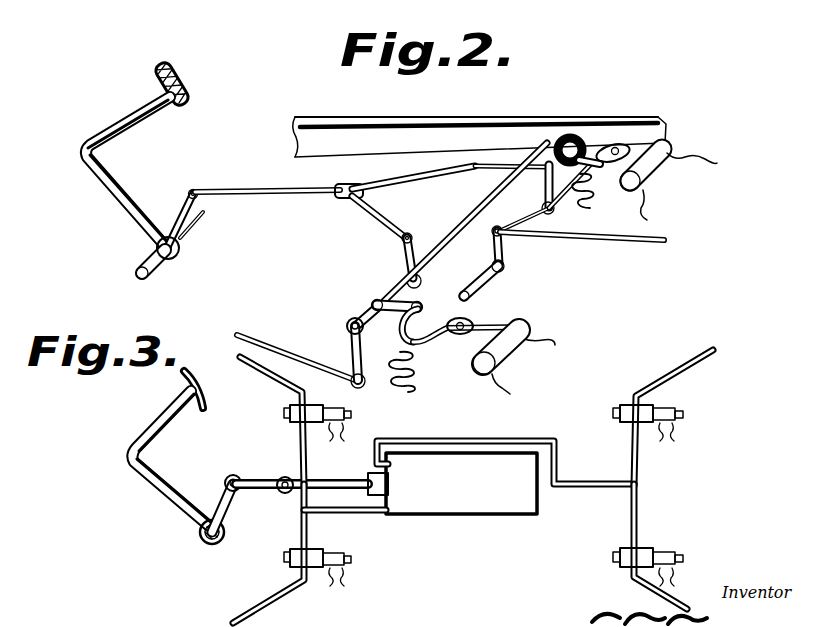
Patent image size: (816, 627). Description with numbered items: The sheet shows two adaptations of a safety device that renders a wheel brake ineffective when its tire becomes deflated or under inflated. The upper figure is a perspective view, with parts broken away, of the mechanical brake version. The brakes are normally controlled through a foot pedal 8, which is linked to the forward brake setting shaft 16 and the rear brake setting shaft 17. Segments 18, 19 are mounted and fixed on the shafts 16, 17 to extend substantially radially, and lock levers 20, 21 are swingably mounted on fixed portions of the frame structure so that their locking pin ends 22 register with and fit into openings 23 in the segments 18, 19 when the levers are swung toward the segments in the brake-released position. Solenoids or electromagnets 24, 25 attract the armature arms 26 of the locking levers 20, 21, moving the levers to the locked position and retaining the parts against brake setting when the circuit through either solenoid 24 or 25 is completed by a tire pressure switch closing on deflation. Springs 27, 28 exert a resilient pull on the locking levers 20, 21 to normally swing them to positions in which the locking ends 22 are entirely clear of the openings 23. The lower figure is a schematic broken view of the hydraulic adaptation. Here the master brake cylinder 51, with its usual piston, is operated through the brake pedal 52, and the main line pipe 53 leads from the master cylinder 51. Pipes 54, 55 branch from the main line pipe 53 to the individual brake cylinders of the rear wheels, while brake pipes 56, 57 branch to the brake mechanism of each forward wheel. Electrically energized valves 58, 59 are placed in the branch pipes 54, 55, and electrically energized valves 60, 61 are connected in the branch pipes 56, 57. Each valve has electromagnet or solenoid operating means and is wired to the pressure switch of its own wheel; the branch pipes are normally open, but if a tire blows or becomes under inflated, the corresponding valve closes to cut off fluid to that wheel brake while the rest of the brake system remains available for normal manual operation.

In FIG. 2, the foot pedal 8 is at (120, 131).
In FIG. 2, the forward brake setting shaft 16 is at (488, 197).
In FIG. 2, the rear brake setting shaft 17 is at (512, 248).
In FIG. 2, the segment 18 is at (385, 296).
In FIG. 2, the segment 19 is at (572, 134).
In FIG. 2, the lock lever 20 is at (460, 340).
In FIG. 2, the lock lever 21 is at (622, 145).
In FIG. 2, the locking pin end 22 is at (400, 322).
In FIG. 2, the opening 23 is at (432, 291).
In FIG. 2, the solenoid 24 is at (502, 373).
In FIG. 2, the solenoid 25 is at (653, 182).
In FIG. 2, the armature arm 26 is at (662, 150).
In FIG. 2, the spring 27 is at (400, 385).
In FIG. 2, the spring 28 is at (595, 206).
In FIG. 3, the master brake cylinder 51 is at (457, 515).
In FIG. 3, the brake pedal 52 is at (185, 382).
In FIG. 3, the main line pipe 53 is at (567, 492).
In FIG. 3, the branch pipe 54 is at (640, 447).
In FIG. 3, the branch pipe 55 is at (640, 515).
In FIG. 3, the brake pipe 56 is at (310, 449).
In FIG. 3, the brake pipe 57 is at (309, 531).
In FIG. 3, the electrically energized valve 58 is at (618, 407).
In FIG. 3, the electrically energized valve 59 is at (627, 565).
In FIG. 3, the electrically energized valve 60 is at (288, 408).
In FIG. 3, the electrically energized valve 61 is at (287, 560).